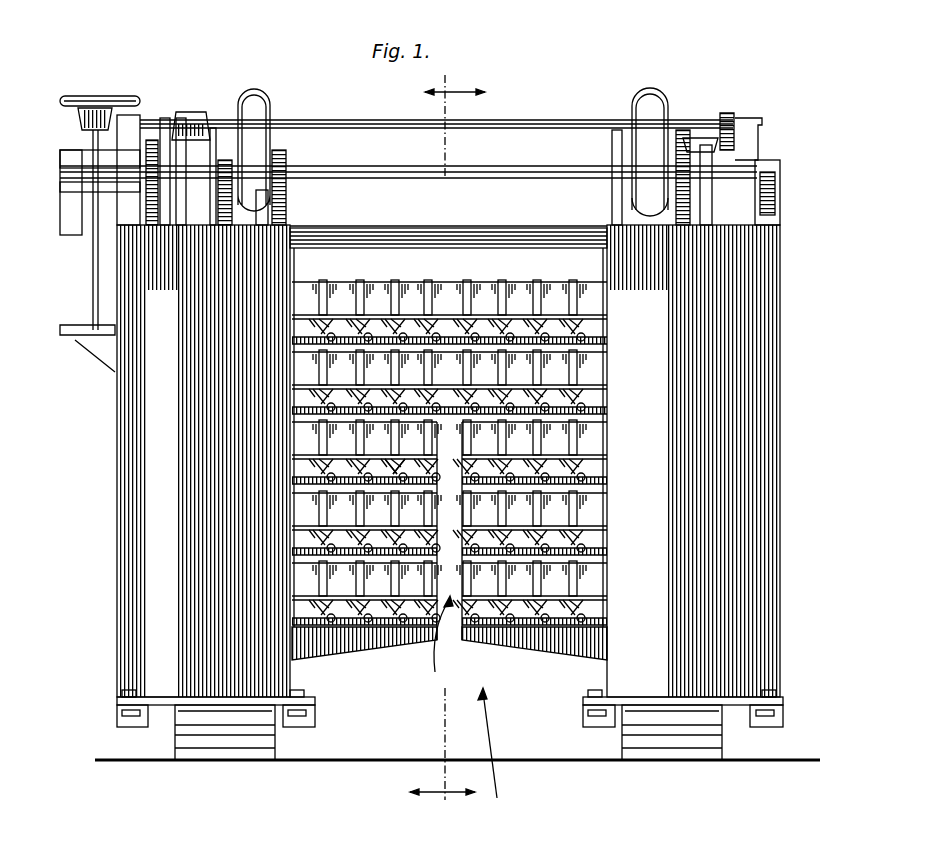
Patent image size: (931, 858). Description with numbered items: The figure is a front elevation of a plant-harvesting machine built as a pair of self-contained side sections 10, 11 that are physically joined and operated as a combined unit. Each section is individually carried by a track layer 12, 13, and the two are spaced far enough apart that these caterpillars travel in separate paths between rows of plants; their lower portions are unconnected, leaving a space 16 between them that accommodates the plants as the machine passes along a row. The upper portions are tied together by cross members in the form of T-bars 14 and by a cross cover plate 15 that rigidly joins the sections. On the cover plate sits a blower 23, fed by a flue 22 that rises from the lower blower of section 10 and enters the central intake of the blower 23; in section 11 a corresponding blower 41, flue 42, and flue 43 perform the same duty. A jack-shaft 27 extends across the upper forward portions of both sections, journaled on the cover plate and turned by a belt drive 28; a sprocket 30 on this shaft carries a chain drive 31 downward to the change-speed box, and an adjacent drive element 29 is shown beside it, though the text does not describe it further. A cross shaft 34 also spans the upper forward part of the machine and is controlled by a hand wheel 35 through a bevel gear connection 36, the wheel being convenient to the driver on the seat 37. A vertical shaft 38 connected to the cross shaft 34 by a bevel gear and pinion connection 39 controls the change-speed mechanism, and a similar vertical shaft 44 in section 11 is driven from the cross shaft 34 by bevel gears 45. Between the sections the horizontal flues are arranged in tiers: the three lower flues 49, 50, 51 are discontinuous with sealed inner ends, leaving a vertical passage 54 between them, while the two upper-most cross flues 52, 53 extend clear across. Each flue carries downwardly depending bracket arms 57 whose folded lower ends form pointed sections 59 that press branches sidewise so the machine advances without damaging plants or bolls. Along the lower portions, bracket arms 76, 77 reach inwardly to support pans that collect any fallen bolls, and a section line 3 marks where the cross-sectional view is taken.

The section line 3 is at (458, 440).
The side section 10 is at (205, 461).
The side section 11 is at (691, 461).
The track layer 12 is at (216, 725).
The track layer 13 is at (683, 725).
The T-bar 14 is at (418, 220).
The cross cover plate 15 is at (518, 228).
The space 16 is at (495, 752).
The flue 22 is at (213, 155).
The blower 23 is at (258, 110).
The jack-shaft 27 is at (371, 168).
The belt drive 28 is at (288, 210).
The pinion 29 is at (264, 198).
The sprocket 30 is at (166, 207).
The chain drive 31 is at (147, 203).
The cross shaft 34 is at (333, 120).
The hand wheel 35 is at (130, 96).
The bevel gear connection 36 is at (112, 120).
The seat 37 is at (71, 160).
The vertical shaft 38 is at (200, 223).
The bevel gear and pinion connection 39 is at (187, 165).
The blower 41 is at (640, 105).
The flue 42 is at (688, 138).
The flue 43 is at (657, 213).
The vertical shaft 44 is at (723, 198).
The bevel gears 45 is at (714, 125).
The horizontal flue 49 is at (449, 593).
The horizontal flue 50 is at (449, 523).
The horizontal flue 51 is at (490, 504).
The cross flue 52 is at (423, 367).
The cross flue 53 is at (302, 300).
The vertical passage 54 is at (438, 640).
The bracket arm 57 is at (360, 283).
The pointed section 59 is at (395, 492).
The bracket arm 76 is at (353, 643).
The bracket arm 77 is at (533, 633).